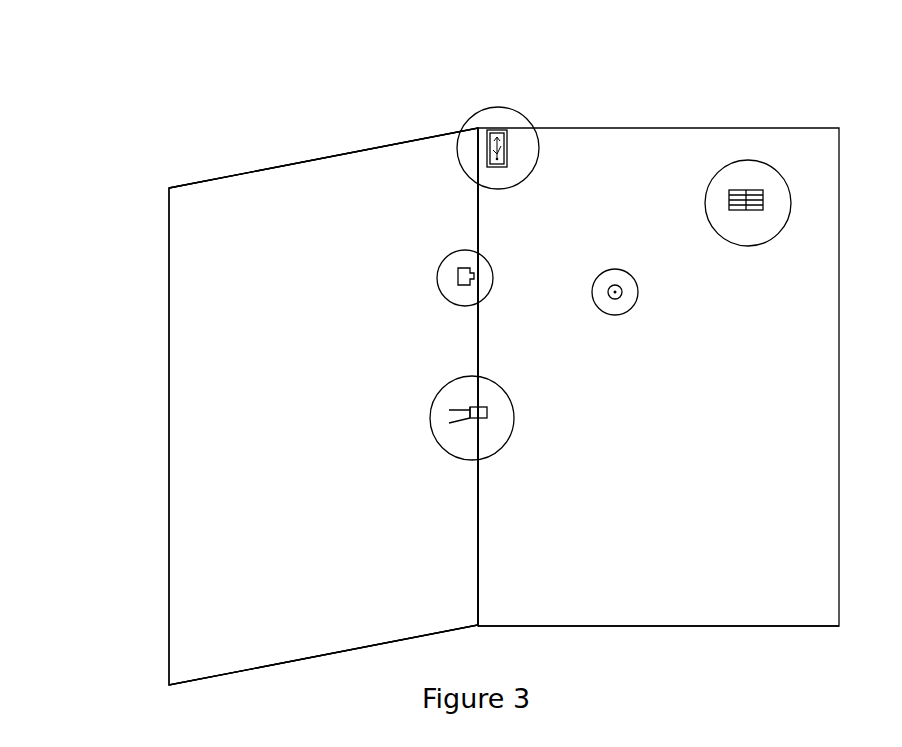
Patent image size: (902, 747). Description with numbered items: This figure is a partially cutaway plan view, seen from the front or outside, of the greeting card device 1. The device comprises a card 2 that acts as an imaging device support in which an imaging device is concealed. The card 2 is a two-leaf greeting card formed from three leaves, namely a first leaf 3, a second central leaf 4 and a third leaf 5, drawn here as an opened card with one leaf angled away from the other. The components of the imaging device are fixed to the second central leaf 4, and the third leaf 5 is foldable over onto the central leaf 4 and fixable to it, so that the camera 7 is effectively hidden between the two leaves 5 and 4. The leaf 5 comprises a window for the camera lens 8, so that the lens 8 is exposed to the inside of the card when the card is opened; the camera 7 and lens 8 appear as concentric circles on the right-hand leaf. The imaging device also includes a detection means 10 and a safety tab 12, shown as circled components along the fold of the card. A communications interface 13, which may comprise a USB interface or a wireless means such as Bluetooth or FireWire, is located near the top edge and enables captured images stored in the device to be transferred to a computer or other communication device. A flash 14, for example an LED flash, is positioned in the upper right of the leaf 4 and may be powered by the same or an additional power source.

The greeting card device 1 is at (281, 132).
The card 2 is at (203, 395).
The first leaf 3 is at (202, 544).
The second central leaf 4 is at (842, 418).
The third leaf 5 is at (662, 607).
The camera 7 is at (633, 313).
The lens 8 is at (621, 289).
The detection means 10 is at (500, 448).
The safety tab 12 is at (440, 256).
The communications interface 13 is at (535, 107).
The flash 14 is at (750, 160).